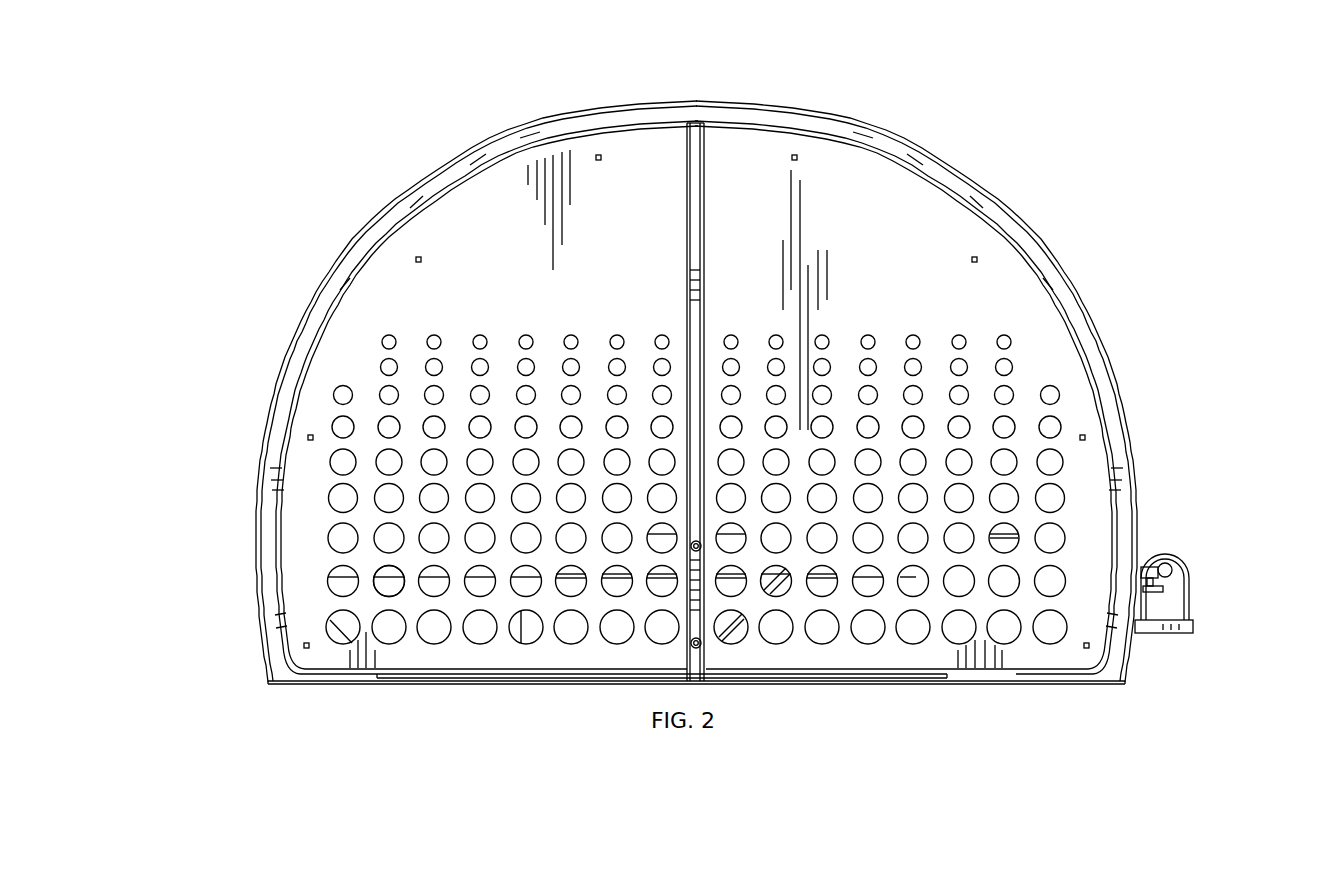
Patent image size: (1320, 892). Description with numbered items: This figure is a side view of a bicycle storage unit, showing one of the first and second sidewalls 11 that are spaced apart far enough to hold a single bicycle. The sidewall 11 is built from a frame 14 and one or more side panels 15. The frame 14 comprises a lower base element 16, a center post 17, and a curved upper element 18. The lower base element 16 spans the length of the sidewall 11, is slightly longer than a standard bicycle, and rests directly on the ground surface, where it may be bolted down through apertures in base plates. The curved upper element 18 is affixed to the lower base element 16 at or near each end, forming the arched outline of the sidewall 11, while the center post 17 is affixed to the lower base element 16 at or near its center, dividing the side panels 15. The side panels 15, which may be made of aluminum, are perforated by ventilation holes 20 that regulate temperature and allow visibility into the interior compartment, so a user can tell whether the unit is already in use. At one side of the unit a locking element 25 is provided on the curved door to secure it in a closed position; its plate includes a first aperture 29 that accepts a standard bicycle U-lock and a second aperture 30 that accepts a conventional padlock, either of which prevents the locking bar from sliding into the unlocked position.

The sidewall 11 is at (352, 222).
The frame 14 is at (250, 687).
The side panel 15 is at (877, 228).
The lower base element 16 is at (1040, 677).
The center post 17 is at (700, 455).
The curved upper element 18 is at (1038, 280).
The ventilation hole 20 is at (388, 587).
The locking element 25 is at (1227, 549).
The first aperture 29 is at (1160, 569).
The second aperture 30 is at (1150, 566).